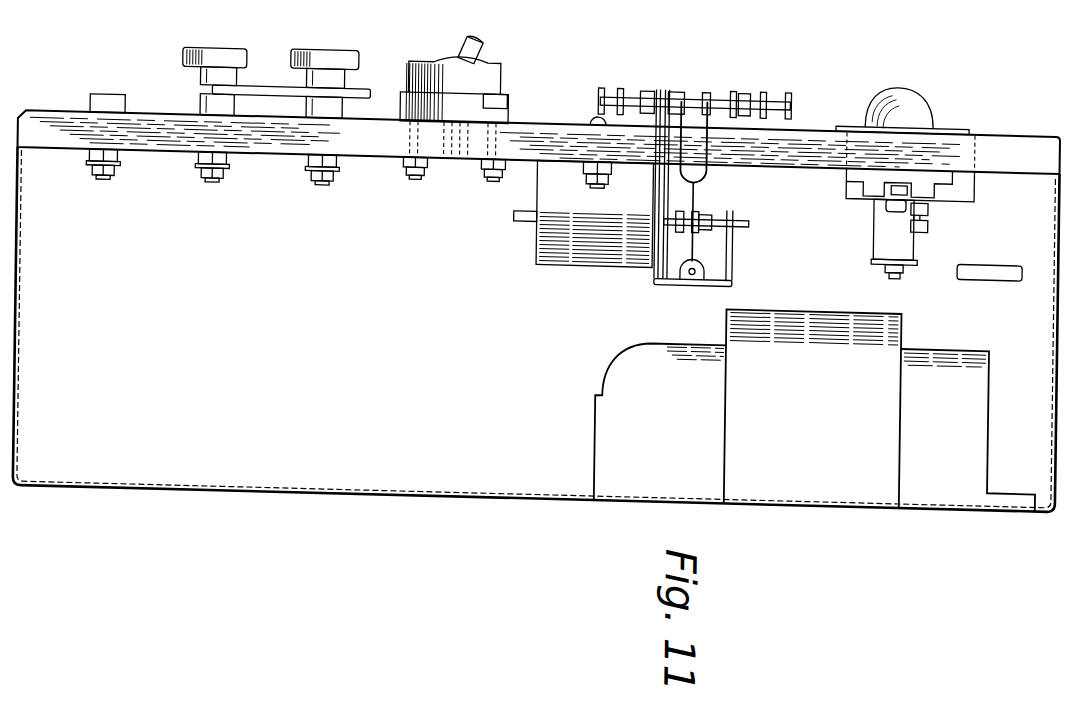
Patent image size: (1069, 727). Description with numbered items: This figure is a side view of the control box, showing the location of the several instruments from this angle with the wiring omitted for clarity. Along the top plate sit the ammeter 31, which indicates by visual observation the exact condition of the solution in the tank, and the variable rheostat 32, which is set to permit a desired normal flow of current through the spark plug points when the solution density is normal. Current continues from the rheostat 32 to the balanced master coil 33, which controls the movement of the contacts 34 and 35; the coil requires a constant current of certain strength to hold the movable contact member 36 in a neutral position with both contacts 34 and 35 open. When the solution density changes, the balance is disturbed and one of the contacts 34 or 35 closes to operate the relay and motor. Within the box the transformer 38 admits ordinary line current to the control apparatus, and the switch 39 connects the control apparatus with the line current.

The ammeter 31 is at (859, 108).
The variable rheostat 32 is at (272, 85).
The balanced master coil 33 is at (583, 214).
The contact 34 is at (677, 80).
The contact 35 is at (710, 76).
The movable contact member 36 is at (696, 166).
The transformer 38 is at (816, 408).
The switch 39 is at (422, 50).